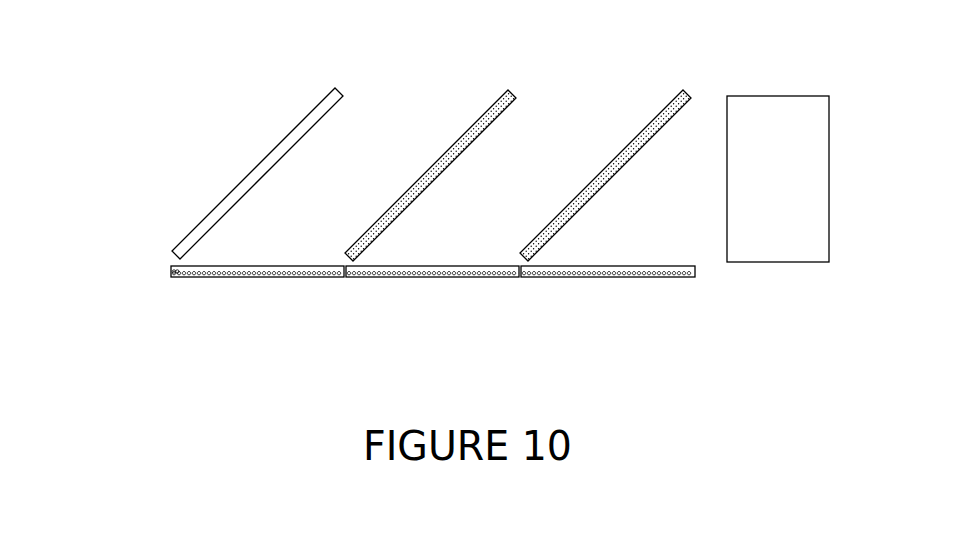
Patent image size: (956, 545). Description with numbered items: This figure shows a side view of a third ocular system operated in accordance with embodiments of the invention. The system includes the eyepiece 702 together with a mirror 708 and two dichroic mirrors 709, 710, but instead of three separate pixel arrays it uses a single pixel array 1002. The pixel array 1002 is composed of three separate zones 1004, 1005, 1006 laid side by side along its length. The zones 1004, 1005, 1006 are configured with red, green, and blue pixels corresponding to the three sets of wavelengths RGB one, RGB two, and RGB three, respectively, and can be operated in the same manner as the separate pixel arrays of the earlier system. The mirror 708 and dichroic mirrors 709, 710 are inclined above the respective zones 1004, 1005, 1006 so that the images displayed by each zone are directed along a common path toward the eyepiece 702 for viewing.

The mirror 708 is at (278, 146).
The dichroic mirror 709 is at (450, 146).
The dichroic mirror 710 is at (625, 148).
The eyepiece 702 is at (799, 232).
The pixel array 1002 is at (128, 271).
The zone 1004 is at (207, 280).
The zone 1005 is at (388, 280).
The zone 1006 is at (567, 278).